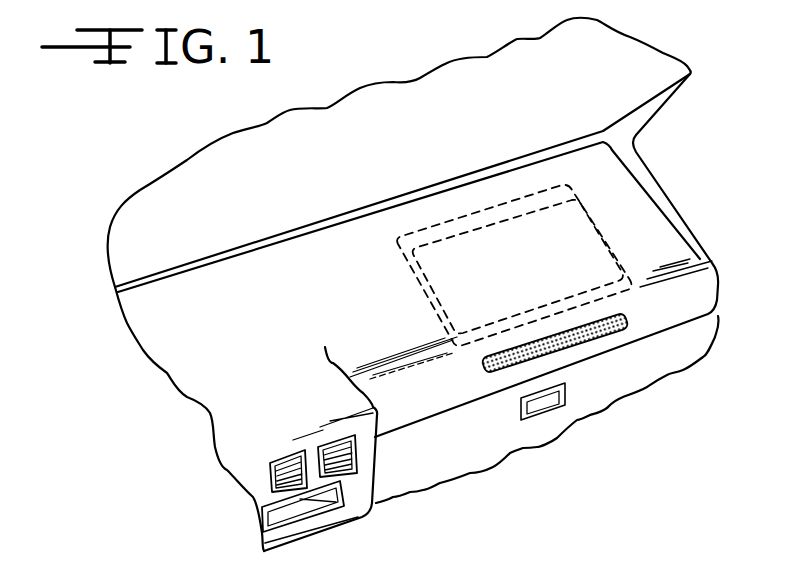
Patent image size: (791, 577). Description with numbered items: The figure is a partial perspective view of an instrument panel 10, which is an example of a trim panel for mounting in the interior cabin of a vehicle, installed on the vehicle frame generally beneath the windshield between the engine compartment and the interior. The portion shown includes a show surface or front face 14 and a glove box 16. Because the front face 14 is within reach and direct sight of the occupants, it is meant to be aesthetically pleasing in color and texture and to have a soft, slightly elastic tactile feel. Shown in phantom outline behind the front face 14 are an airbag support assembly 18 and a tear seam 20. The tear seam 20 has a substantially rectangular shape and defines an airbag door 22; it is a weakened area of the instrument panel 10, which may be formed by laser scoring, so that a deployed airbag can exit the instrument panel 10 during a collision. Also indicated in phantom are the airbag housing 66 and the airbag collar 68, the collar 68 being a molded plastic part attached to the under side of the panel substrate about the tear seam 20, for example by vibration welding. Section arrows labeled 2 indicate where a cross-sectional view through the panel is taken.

The section line 2- 2 is at (532, 137).
The instrument panel 10 is at (97, 215).
The front face 14 is at (238, 320).
The glove box 16 is at (465, 430).
The airbag support assembly 18 is at (383, 318).
The tear seam 20 is at (583, 200).
The airbag door 22 is at (572, 260).
The airbag housing 66 is at (386, 350).
The airbag collar 68 is at (387, 350).